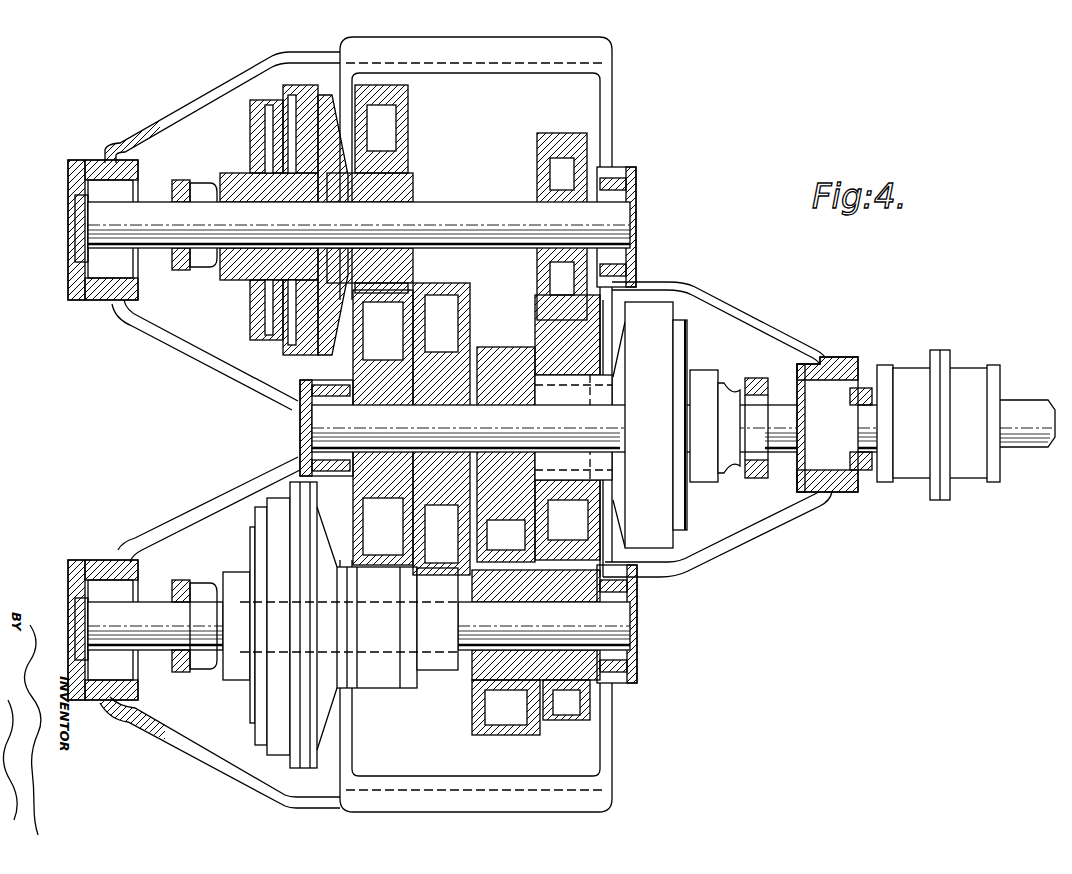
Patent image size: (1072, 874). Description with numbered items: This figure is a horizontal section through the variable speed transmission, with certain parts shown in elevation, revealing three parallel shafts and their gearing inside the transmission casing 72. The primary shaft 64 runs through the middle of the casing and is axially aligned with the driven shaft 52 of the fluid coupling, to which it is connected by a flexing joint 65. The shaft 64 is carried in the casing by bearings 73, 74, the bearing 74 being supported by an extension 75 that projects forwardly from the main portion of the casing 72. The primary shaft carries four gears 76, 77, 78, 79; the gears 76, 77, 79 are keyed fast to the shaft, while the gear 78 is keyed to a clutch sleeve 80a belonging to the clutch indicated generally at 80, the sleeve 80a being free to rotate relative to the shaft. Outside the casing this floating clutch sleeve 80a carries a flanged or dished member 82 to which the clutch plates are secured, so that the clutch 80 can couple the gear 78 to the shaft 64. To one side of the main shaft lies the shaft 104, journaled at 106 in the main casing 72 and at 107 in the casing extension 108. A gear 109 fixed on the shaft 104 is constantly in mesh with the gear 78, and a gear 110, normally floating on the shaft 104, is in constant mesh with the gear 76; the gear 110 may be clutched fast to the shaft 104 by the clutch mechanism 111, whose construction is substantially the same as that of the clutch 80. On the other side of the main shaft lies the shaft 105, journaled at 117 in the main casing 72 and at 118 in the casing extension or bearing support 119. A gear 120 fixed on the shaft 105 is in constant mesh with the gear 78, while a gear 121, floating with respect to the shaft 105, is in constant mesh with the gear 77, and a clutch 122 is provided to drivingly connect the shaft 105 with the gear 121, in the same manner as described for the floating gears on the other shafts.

The driven shaft 52 is at (1025, 405).
The primary shaft 64 is at (318, 422).
The flexing joint 65 is at (940, 350).
The transmission casing 72 is at (612, 110).
The bearing 73 is at (300, 462).
The bearing 74 is at (845, 493).
The casing extension 75 is at (748, 322).
The gear 76 is at (378, 482).
The gear 77 is at (494, 342).
The gear 78 is at (540, 330).
The gear 79 is at (447, 519).
The clutch 80 is at (688, 364).
The clutch sleeve 80a is at (573, 427).
The flanged or dished member 82 is at (690, 425).
The shaft 104 is at (470, 210).
The shaft 105 is at (475, 672).
The bearing 106 is at (640, 197).
The bearing 107 is at (98, 300).
The casing extension 108 is at (206, 108).
The gear 109 is at (560, 138).
The gear 110 is at (388, 121).
The clutch mechanism 111 is at (246, 156).
The bearing 117 is at (640, 660).
The bearing 118 is at (100, 700).
The casing extension or bearing support 119 is at (165, 735).
The gear 120 is at (570, 718).
The gear 121 is at (485, 732).
The clutch 122 is at (262, 561).